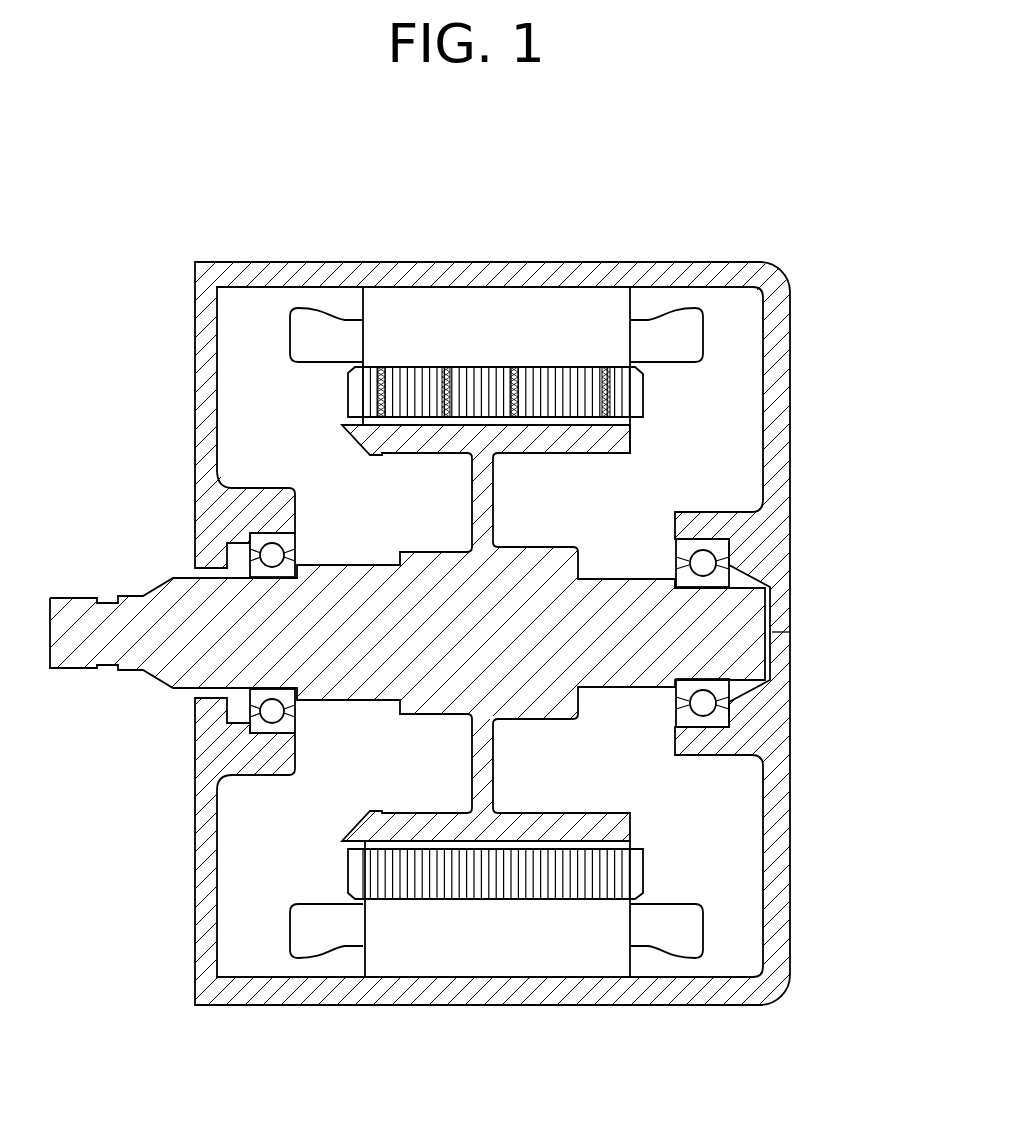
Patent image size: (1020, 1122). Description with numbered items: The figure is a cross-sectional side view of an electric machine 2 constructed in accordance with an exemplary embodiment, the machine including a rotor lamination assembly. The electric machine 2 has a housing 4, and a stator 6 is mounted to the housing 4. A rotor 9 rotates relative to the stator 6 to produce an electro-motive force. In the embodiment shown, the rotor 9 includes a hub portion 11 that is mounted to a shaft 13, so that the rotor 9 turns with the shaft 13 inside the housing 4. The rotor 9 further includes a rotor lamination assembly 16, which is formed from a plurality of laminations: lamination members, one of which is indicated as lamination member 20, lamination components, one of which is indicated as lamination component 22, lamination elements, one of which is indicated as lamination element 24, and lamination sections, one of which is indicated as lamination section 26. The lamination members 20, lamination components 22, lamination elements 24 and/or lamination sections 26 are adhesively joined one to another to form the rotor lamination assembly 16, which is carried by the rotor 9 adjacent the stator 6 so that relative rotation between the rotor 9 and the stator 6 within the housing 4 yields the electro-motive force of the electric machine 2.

The electric machine 2 is at (183, 160).
The housing 4 is at (716, 235).
The stator 6 is at (698, 375).
The rotor 9 is at (692, 449).
The hub portion 11 is at (503, 443).
The shaft 13 is at (168, 615).
The rotor lamination assembly 16 is at (300, 387).
The lamination member 20 is at (396, 367).
The lamination component 22 is at (448, 365).
The lamination element 24 is at (518, 365).
The lamination section 26 is at (605, 367).